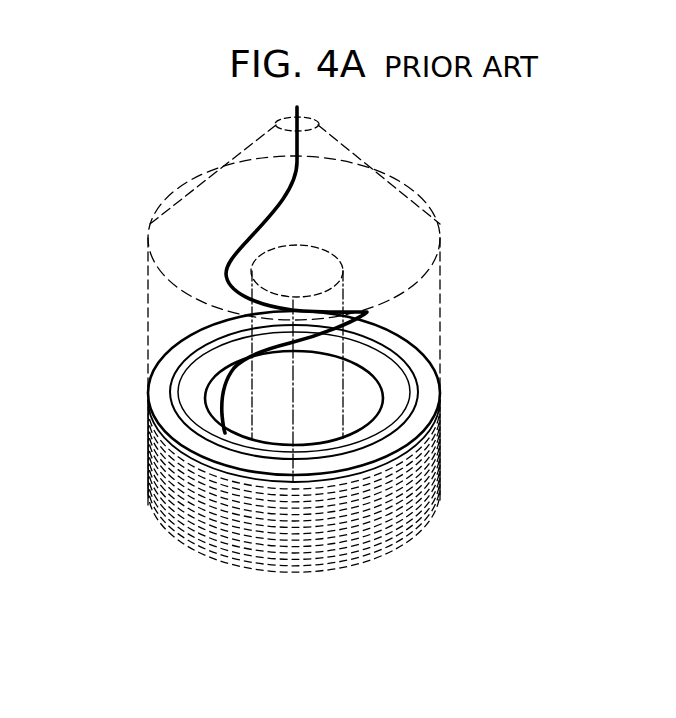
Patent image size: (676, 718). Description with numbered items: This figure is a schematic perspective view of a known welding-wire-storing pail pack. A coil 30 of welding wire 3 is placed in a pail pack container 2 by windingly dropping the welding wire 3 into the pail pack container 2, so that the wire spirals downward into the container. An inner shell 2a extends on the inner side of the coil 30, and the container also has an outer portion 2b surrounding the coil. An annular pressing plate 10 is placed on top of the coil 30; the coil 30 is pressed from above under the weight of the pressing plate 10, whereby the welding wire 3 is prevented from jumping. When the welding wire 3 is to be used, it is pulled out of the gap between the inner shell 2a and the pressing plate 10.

The pail pack container 2 is at (454, 135).
The inner shell 2a is at (245, 268).
The outer cylindrical portion of mold 2b is at (433, 284).
The welding wire 3 is at (302, 117).
The pressing plate 10 is at (427, 384).
The coil 30 is at (448, 395).